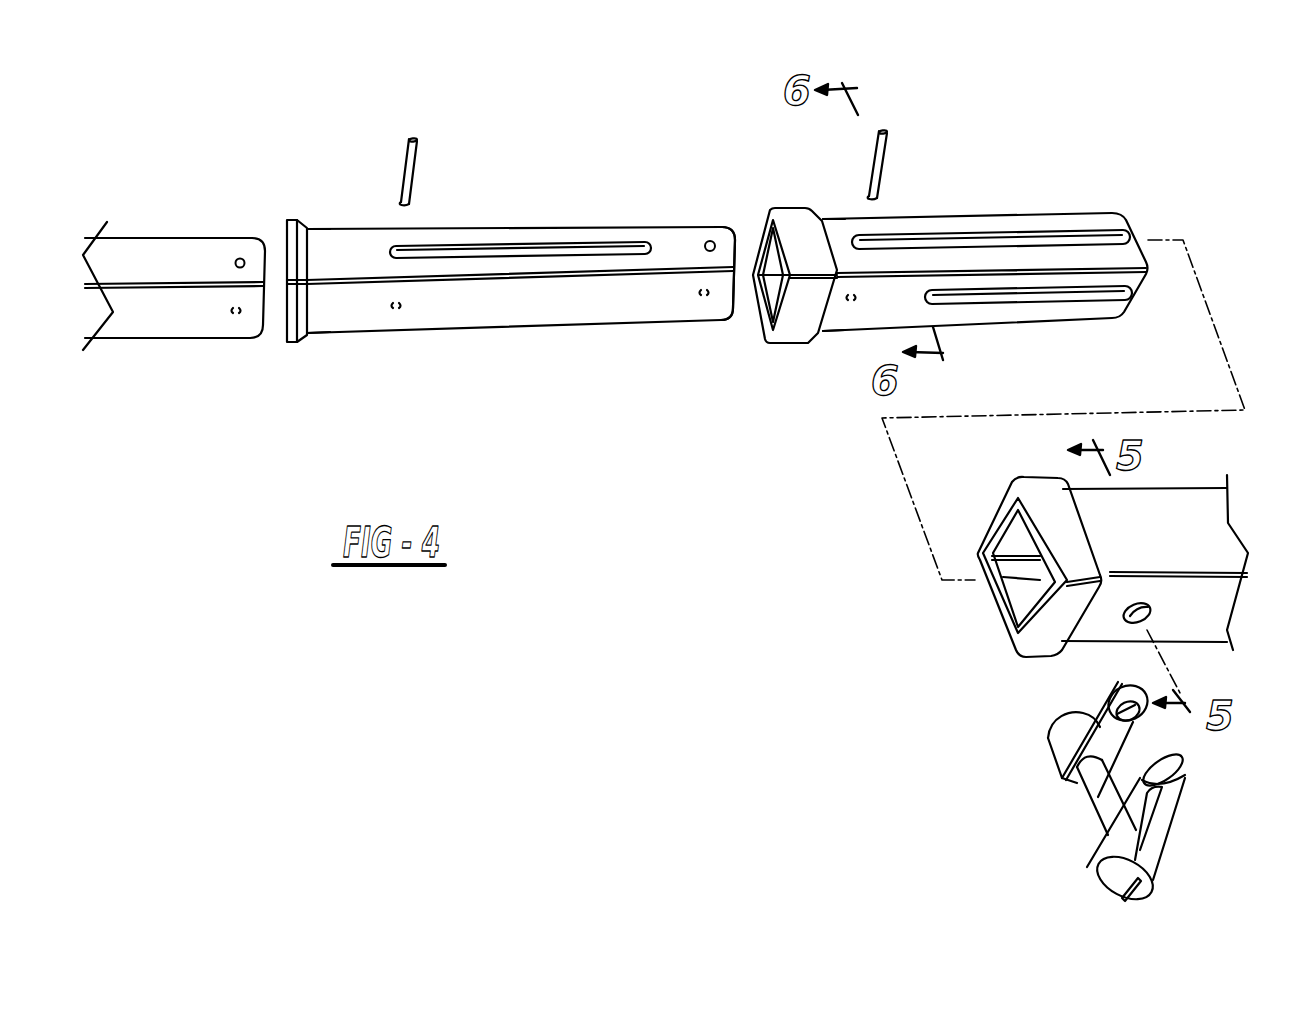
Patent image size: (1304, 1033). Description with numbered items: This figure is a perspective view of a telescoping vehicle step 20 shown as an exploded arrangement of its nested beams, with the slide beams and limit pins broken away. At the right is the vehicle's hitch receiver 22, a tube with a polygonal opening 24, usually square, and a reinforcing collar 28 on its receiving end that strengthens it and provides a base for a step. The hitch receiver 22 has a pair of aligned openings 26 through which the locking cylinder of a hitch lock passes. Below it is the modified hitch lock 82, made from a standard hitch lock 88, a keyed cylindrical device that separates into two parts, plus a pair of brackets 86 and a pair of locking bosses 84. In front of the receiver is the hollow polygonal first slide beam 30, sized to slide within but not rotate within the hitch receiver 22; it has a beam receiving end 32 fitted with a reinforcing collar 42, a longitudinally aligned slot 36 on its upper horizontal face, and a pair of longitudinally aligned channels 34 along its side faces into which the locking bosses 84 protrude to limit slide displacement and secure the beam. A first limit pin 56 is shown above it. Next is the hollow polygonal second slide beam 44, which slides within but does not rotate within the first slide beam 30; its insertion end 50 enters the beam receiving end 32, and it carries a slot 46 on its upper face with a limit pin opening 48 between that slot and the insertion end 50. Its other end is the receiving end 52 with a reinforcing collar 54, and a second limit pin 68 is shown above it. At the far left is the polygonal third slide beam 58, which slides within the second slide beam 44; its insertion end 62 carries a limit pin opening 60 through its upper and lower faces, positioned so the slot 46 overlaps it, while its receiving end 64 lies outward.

The telescoping vehicle step 20 is at (535, 295).
The hitch receiver 22 is at (1097, 576).
The polygonal opening 24 is at (1023, 597).
The pair of aligned openings 26 is at (1157, 602).
The reinforcing collar 28 is at (1037, 478).
The first slide beam 30 is at (943, 271).
The beam receiving end 32 is at (858, 327).
The longitudinally aligned channels 34 is at (1023, 310).
The longitudinally aligned slot 36 is at (985, 237).
The reinforcing collar 42 is at (790, 208).
The second slide beam 44 is at (535, 276).
The slot 46 is at (515, 243).
The limit pin opening 48 is at (707, 245).
The insertion end 50 is at (707, 312).
The receiving end 52 is at (327, 307).
The reinforcing collar 54 is at (292, 343).
The first limit pin 56 is at (883, 128).
The third slide beam 58 is at (186, 287).
The limit pin opening 60 is at (240, 258).
The insertion end 62 is at (210, 320).
The receiving end 64 is at (117, 323).
The second limit pin 68 is at (420, 135).
The modified hitch lock 82 is at (1114, 793).
The locking bosses 84 is at (1057, 733).
The brackets 86 is at (1097, 840).
The standard hitch lock 88 is at (1097, 797).